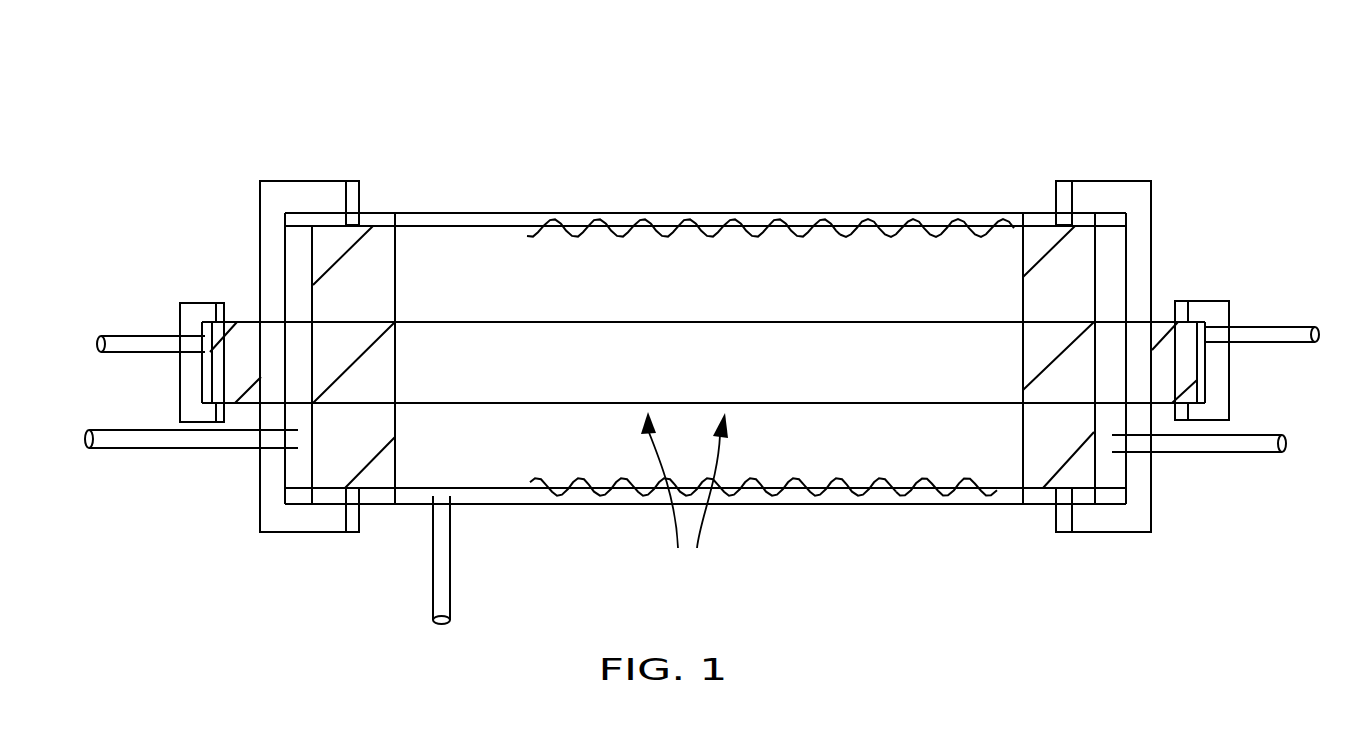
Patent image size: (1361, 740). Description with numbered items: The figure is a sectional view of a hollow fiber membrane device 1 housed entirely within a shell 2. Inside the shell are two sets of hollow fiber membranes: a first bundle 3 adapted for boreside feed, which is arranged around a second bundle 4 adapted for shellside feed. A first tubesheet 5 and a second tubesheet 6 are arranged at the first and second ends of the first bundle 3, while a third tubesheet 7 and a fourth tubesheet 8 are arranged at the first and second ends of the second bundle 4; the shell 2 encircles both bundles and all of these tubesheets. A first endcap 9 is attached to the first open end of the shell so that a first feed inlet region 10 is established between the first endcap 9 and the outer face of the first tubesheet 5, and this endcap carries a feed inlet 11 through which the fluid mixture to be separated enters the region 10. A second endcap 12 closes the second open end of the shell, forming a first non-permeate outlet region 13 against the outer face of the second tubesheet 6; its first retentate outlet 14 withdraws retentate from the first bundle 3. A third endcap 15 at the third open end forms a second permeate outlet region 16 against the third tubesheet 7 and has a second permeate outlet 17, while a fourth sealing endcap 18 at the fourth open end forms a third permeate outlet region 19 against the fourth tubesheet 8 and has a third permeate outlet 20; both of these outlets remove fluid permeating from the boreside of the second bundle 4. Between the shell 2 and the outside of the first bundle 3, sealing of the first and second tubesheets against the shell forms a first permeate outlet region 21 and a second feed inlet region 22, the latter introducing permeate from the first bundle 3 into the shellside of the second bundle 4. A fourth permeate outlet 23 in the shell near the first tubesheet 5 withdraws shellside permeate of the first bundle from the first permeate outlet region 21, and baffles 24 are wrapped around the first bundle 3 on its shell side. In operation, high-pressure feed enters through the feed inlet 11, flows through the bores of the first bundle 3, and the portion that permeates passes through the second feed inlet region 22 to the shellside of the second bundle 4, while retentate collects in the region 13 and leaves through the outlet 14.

The hollow fiber membrane device 1 is at (89, 75).
The shell 2 is at (490, 213).
The first bundle of hollow fiber membranes 3 is at (592, 227).
The second bundle of hollow fiber membranes 4 is at (677, 322).
The first tubesheet 5 is at (375, 475).
The second tubesheet 6 is at (1038, 465).
The third tubesheet 7 is at (247, 322).
The fourth tubesheet 8 is at (1164, 318).
The first endcap 9 is at (260, 503).
The first feed inlet region 10 is at (297, 475).
The feed inlet 11 is at (112, 452).
The second endcap 12 is at (1152, 502).
The first non-permeate outlet region 13 is at (1110, 465).
The first retentate outlet 14 is at (1285, 445).
The third endcap 15 is at (197, 302).
The second permeate outlet region 16 is at (206, 393).
The second permeate outlet 17 is at (133, 333).
The fourth sealing endcap 18 is at (1218, 300).
The third permeate outlet region 19 is at (1203, 390).
The third permeate outlet 20 is at (1290, 323).
The first permeate outlet region 21 is at (770, 213).
The second feed inlet region 22 is at (684, 498).
The fourth permeate outlet 23 is at (443, 627).
The baffles 24 is at (923, 480).